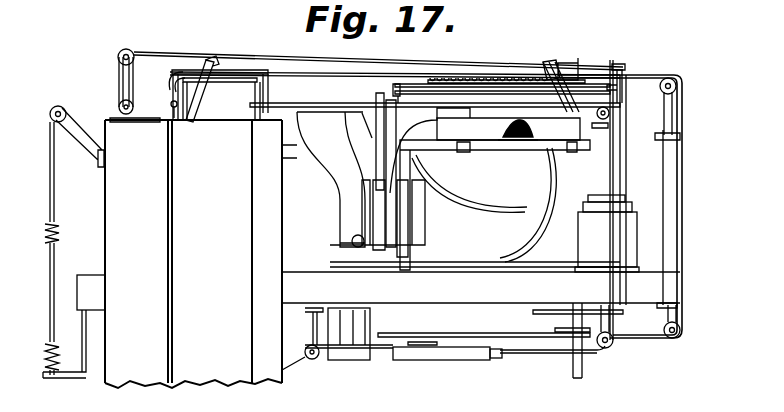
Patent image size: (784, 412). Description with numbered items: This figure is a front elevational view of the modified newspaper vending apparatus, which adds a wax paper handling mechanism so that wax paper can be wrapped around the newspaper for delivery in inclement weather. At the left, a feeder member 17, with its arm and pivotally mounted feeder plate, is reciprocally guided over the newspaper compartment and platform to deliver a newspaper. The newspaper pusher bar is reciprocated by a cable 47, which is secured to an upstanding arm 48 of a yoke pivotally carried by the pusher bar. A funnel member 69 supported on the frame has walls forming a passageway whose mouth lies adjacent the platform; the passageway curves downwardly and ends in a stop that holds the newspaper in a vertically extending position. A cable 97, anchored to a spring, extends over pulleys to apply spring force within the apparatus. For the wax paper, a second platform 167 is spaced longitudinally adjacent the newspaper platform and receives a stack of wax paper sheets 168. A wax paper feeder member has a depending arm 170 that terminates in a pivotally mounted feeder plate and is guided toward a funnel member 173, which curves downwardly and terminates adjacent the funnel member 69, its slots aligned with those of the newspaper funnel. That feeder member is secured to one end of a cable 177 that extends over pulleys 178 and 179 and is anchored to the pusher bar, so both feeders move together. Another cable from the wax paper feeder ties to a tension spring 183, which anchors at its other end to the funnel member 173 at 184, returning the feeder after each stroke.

The feeder member 17 is at (215, 62).
The cable 47 is at (290, 108).
The upstanding arm 48 is at (176, 108).
The funnel member 69 is at (330, 158).
The cable 97 is at (300, 70).
The platform 167 is at (548, 143).
The wax paper sheets 168 is at (512, 140).
The depending arm 170 is at (553, 60).
The funnel member 173 is at (425, 140).
The cable 177 is at (176, 60).
The pulley 178 is at (118, 53).
The pulley 179 is at (114, 108).
The tension spring 183 is at (438, 74).
The anchor point 184 is at (392, 90).